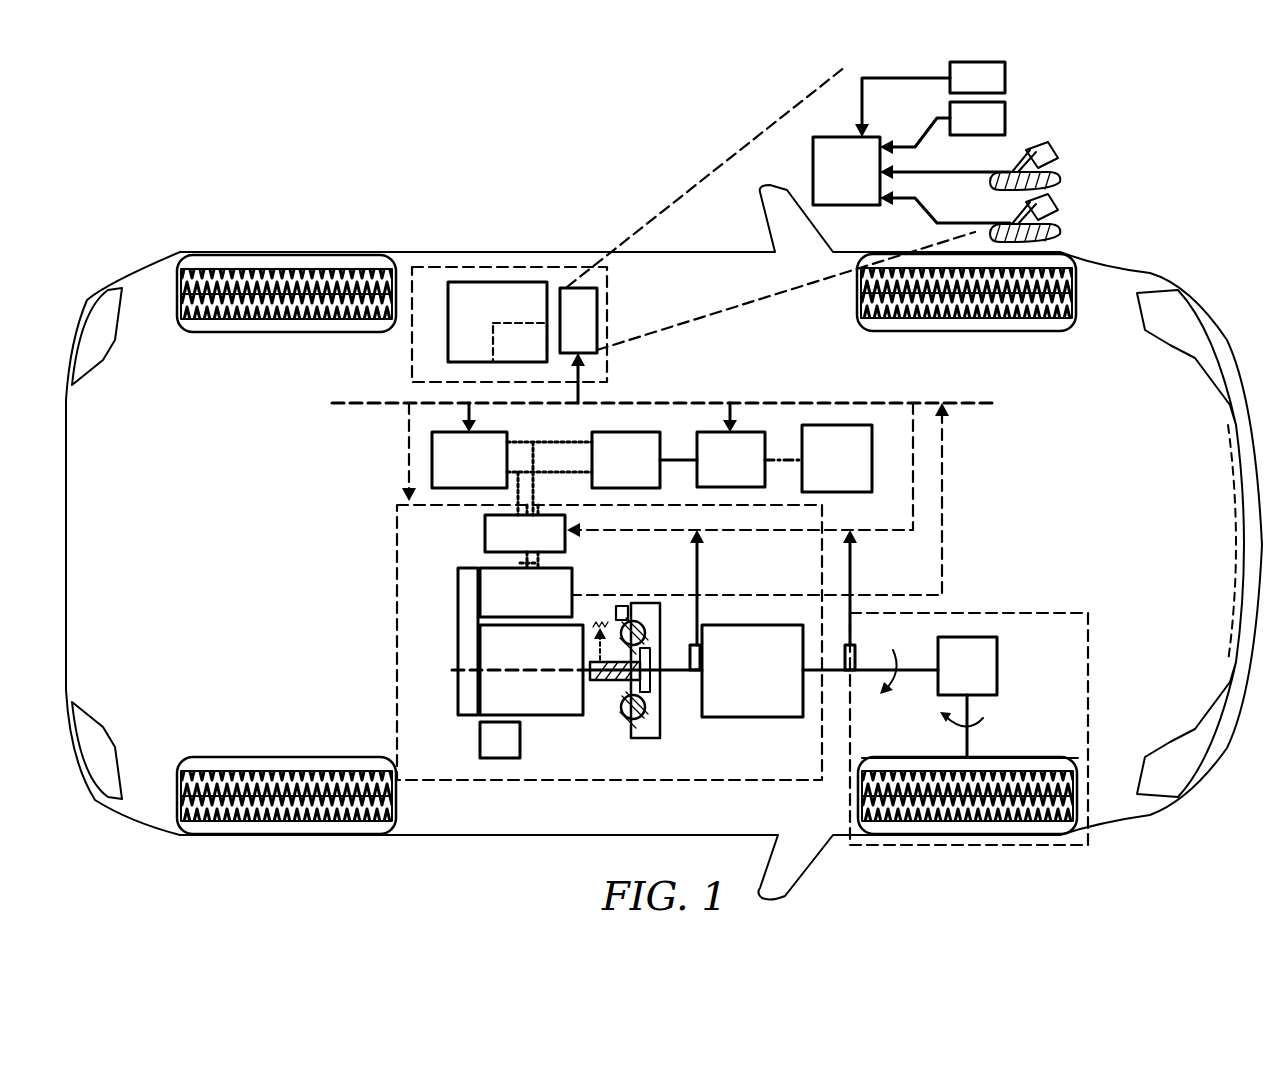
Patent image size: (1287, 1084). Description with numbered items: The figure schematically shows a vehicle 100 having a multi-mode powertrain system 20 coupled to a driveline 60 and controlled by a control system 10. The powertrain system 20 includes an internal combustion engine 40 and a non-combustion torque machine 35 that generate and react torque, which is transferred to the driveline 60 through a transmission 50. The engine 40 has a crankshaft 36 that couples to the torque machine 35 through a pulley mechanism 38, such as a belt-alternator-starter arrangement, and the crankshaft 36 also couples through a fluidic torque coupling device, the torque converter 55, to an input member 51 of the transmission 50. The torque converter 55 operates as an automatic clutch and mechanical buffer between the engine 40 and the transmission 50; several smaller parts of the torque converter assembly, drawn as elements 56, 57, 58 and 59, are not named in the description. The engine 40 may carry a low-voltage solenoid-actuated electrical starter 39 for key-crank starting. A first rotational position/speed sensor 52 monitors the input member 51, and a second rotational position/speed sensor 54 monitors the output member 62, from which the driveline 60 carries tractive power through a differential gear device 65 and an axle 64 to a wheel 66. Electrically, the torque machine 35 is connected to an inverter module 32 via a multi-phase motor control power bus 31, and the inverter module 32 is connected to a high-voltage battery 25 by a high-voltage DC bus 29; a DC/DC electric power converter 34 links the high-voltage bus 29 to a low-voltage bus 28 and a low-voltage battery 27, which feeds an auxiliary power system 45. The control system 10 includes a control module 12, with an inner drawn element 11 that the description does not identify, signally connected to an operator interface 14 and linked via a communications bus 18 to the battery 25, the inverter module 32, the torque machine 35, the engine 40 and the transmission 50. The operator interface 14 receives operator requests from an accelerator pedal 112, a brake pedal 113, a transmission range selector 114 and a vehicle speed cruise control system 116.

The vehicle 100 is at (664, 542).
The control system 10 is at (509, 334).
The engine subsystem 11 is at (520, 342).
The control module 12 is at (497, 322).
The operator interface 14 is at (846, 171).
The communications bus 18 is at (383, 395).
The multi-mode powertrain system 20 is at (833, 577).
The high-voltage battery 25 is at (469, 445).
The low-voltage battery 27 is at (749, 459).
The low-voltage bus 28 is at (683, 460).
The high-voltage DC bus 29 is at (563, 472).
The multi-phase motor control power bus 31 is at (520, 563).
The inverter module 32 is at (525, 536).
The DC/DC electric power converter 34 is at (644, 460).
The torque machine 35 is at (526, 592).
The crankshaft 36 is at (537, 670).
The pulley mechanism 38 is at (457, 668).
The low-voltage solenoid-actuated electrical starter 39 is at (480, 748).
The internal combustion engine 40 is at (531, 670).
The auxiliary power system 45 is at (837, 458).
The transmission 50 is at (752, 671).
The input member 51 is at (690, 675).
The first rotational position/speed sensor 52 is at (700, 655).
The second rotational position/speed sensor 54 is at (857, 660).
The torque converter 55 is at (618, 688).
The clutch plate 56 is at (658, 730).
The clutch hub 57 is at (645, 722).
The clutch apply piston 58 is at (615, 725).
The solenoid valve 59 is at (620, 607).
The driveline 60 is at (1000, 603).
The output member 62 is at (838, 666).
The axle 64 is at (985, 718).
The differential gear device 65 is at (967, 697).
The wheel 66 is at (927, 748).
The accelerator pedal 112 is at (1012, 225).
The brake pedal 113 is at (1012, 172).
The transmission range selector 114 is at (942, 128).
The vehicle speed cruise control system 116 is at (930, 99).